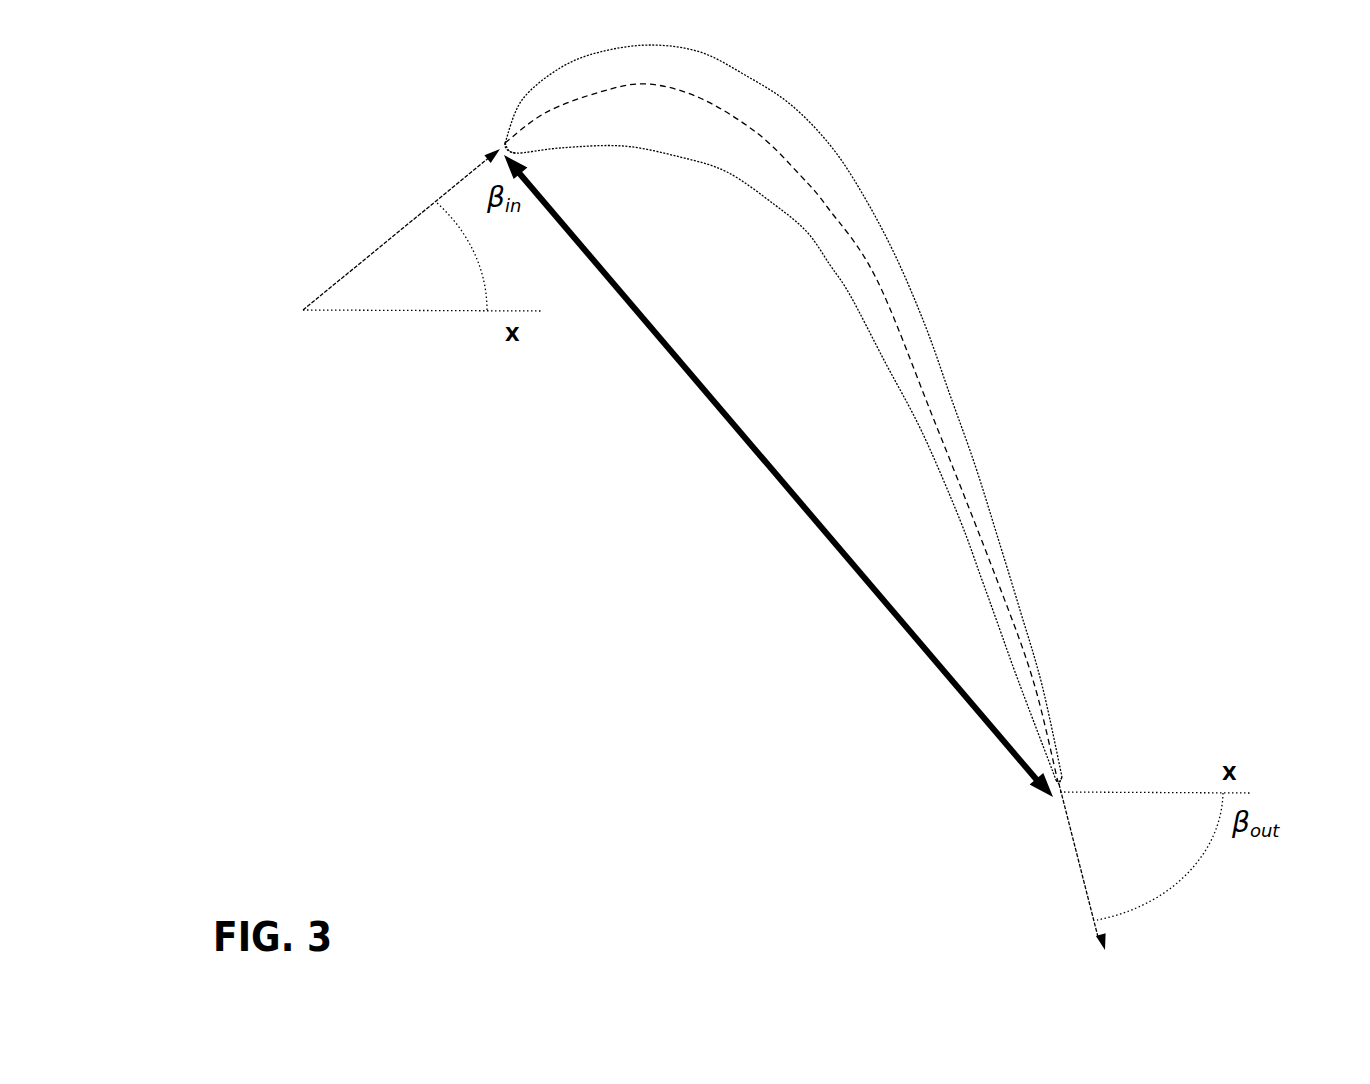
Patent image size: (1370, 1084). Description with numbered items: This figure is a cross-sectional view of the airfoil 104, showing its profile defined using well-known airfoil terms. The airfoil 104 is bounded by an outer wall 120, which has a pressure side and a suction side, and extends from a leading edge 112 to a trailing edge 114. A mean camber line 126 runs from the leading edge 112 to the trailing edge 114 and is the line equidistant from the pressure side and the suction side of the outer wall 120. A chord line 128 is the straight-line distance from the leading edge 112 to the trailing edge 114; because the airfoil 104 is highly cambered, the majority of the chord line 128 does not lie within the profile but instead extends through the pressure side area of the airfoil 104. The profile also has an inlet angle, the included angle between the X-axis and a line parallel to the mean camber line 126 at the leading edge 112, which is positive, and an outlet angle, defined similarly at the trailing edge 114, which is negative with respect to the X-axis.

The airfoil 104 is at (776, 414).
The leading edge 112 is at (500, 147).
The trailing edge 114 is at (1070, 780).
The outer wall 120 is at (921, 430).
The mean camber line 126 is at (827, 210).
The chord line 128 is at (778, 476).